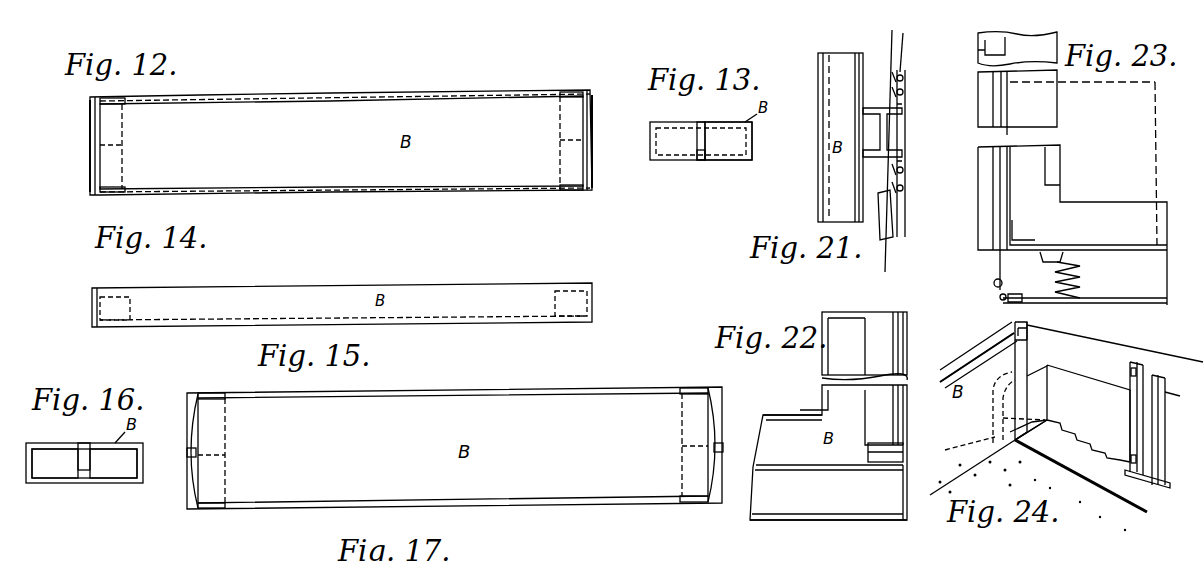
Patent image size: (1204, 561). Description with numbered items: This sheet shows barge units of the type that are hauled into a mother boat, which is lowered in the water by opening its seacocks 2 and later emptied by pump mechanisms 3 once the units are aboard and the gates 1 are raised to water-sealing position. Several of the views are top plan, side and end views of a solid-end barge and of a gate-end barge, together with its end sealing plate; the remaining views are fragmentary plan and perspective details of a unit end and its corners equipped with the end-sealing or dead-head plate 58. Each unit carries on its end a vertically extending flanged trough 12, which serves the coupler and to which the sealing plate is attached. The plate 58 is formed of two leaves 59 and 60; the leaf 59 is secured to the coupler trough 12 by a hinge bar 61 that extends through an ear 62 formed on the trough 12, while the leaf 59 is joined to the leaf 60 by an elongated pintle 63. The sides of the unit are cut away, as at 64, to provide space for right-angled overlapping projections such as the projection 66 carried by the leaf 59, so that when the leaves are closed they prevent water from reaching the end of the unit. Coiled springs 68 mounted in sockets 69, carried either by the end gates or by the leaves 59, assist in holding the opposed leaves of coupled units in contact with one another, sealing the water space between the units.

In FIG. 24, the gate 1 is at (1166, 392).
In FIG. 24, the seacock 2 is at (970, 451).
In FIG. 24, the pump mechanism 3 is at (1125, 495).
In FIG. 13, the flanged trough 12 is at (704, 122).
In FIG. 21, the flanged trough 12 is at (912, 113).
In FIG. 24, the flanged trough 12 is at (1160, 376).
In FIG. 12, the dead-head plate 58 is at (88, 118).
In FIG. 13, the dead-head plate 58 is at (728, 141).
In FIG. 15, the dead-head plate 58 is at (190, 420).
In FIG. 16, the dead-head plate 58 is at (84, 463).
In FIG. 22, the dead-head plate 58 is at (770, 414).
In FIG. 12, the leaf 59 is at (594, 112).
In FIG. 21, the leaf 59 is at (906, 70).
In FIG. 23, the leaf 59 is at (1112, 304).
In FIG. 23, the leaf 60 is at (996, 270).
In FIG. 24, the leaf 60 is at (1085, 466).
In FIG. 24, the hinge bar 61 is at (1125, 393).
In FIG. 24, the ear 62 is at (1134, 362).
In FIG. 23, the elongated pintle 63 is at (1002, 301).
In FIG. 24, the elongated pintle 63 is at (1040, 428).
In FIG. 24, the cut-away portion of unit side 64 is at (1000, 402).
In FIG. 24, the overlapping projection 66 is at (1022, 452).
In FIG. 23, the coiled spring 68 is at (1085, 283).
In FIG. 23, the socket 69 is at (1047, 260).